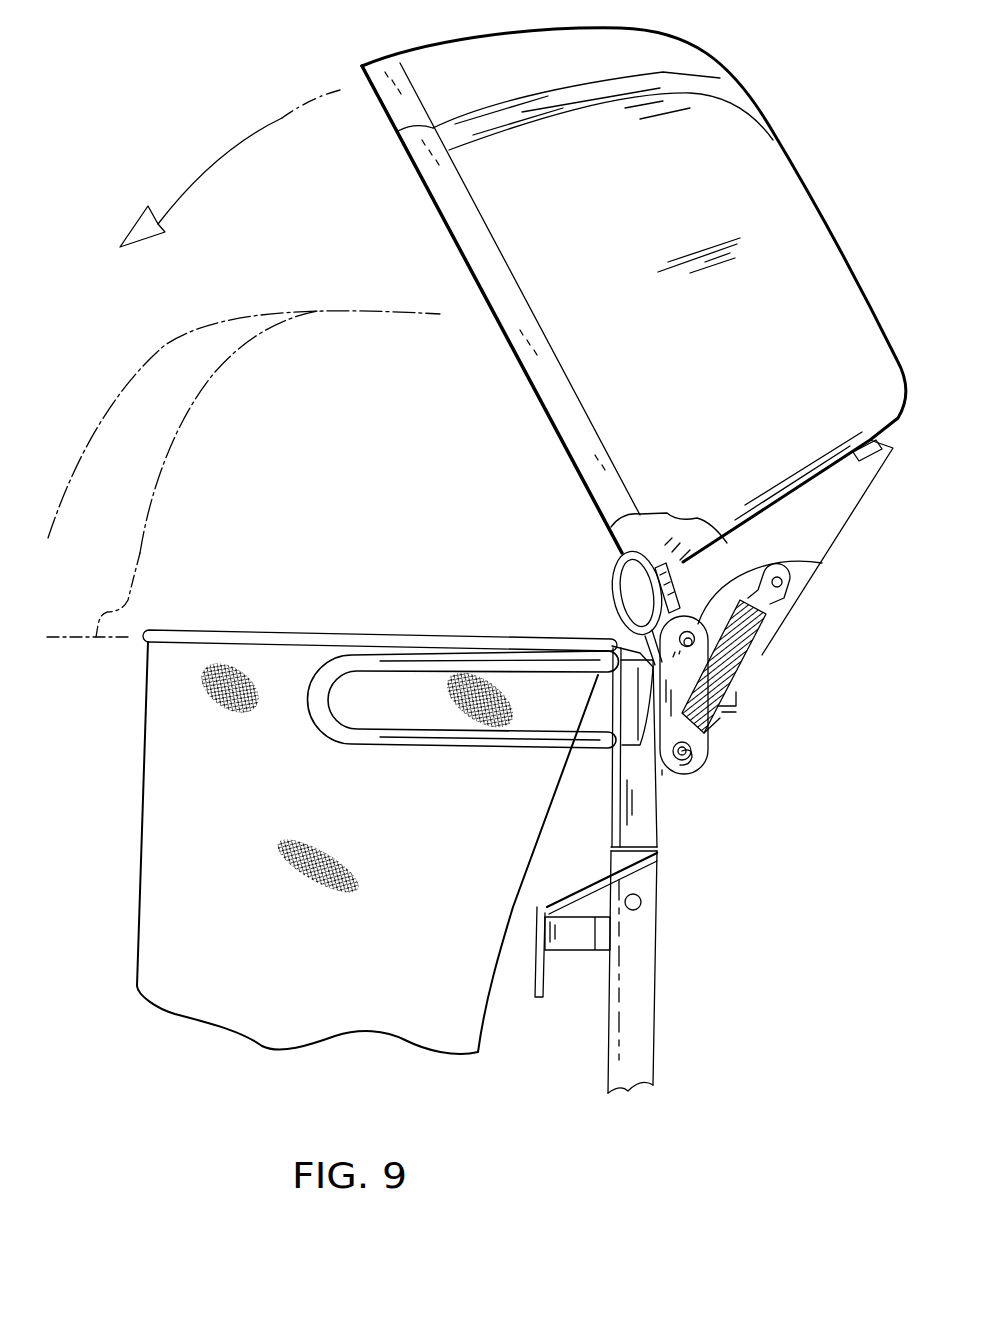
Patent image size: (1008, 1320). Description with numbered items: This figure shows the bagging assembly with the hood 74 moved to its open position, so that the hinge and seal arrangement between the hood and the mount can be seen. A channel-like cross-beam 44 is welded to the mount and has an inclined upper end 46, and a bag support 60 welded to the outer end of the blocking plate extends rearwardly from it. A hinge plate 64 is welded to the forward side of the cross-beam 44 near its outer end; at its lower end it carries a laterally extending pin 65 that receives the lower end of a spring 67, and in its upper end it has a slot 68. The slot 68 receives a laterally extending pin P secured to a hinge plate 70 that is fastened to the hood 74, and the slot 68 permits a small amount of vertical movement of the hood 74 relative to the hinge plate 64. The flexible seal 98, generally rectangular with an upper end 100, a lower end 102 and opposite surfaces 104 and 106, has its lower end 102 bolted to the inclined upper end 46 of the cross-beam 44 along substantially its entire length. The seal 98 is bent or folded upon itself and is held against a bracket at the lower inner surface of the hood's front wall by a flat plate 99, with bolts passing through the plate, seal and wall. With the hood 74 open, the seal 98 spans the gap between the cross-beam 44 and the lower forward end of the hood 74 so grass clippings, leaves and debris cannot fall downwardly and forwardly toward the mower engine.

The hood 74 is at (773, 128).
The hinge plate 70 is at (790, 527).
The flat plate 99 is at (632, 545).
The upper end 100 is at (678, 577).
The opposite surface 106 is at (607, 566).
The flexible seal 98 is at (600, 560).
The opposite surface 104 is at (610, 594).
The slot 68 is at (822, 563).
The spring 67 is at (750, 652).
The hinge plate 64 is at (687, 687).
The cross-beam 44 is at (650, 728).
The pin 65 is at (690, 762).
The lower end 102 is at (643, 747).
The pin P is at (650, 667).
The inclined upper end 46 is at (607, 670).
The bag support 60 is at (432, 660).